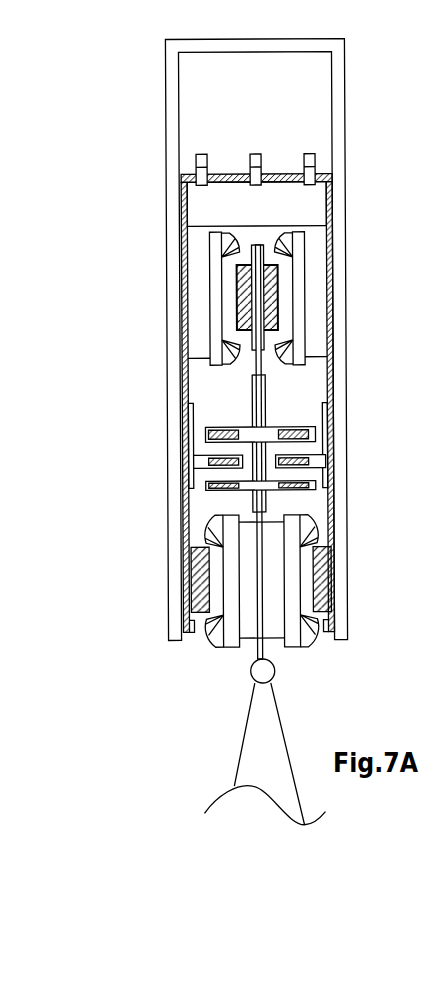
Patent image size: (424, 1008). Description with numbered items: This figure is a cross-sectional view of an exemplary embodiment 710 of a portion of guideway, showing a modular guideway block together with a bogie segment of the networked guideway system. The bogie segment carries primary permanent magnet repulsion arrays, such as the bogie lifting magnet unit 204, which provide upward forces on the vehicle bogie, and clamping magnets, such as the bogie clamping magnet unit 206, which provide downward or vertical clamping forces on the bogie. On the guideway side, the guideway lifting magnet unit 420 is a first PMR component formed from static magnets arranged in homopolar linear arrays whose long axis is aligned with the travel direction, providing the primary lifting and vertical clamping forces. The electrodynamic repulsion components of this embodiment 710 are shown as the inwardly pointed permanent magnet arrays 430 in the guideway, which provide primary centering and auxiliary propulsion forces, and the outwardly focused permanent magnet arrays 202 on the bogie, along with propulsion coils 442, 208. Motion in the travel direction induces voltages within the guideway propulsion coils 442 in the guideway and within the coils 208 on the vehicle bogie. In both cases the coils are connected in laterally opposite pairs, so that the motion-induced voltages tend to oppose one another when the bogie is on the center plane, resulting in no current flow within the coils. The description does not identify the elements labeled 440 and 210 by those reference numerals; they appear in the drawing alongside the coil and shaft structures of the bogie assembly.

The exemplary embodiment 710 is at (152, 113).
The coil assembly 440 is at (197, 275).
The guideway propulsion coils 442 is at (210, 311).
The shaft 210 is at (258, 262).
The outwardly focused permanent magnet arrays 202 is at (268, 290).
The bogie lifting magnet unit 204 is at (313, 434).
The guideway lifting magnet unit 420 is at (205, 461).
The bogie clamping magnet unit 206 is at (313, 488).
The coils 208 is at (295, 545).
The guideway propulsion magnet unit 430 is at (190, 573).